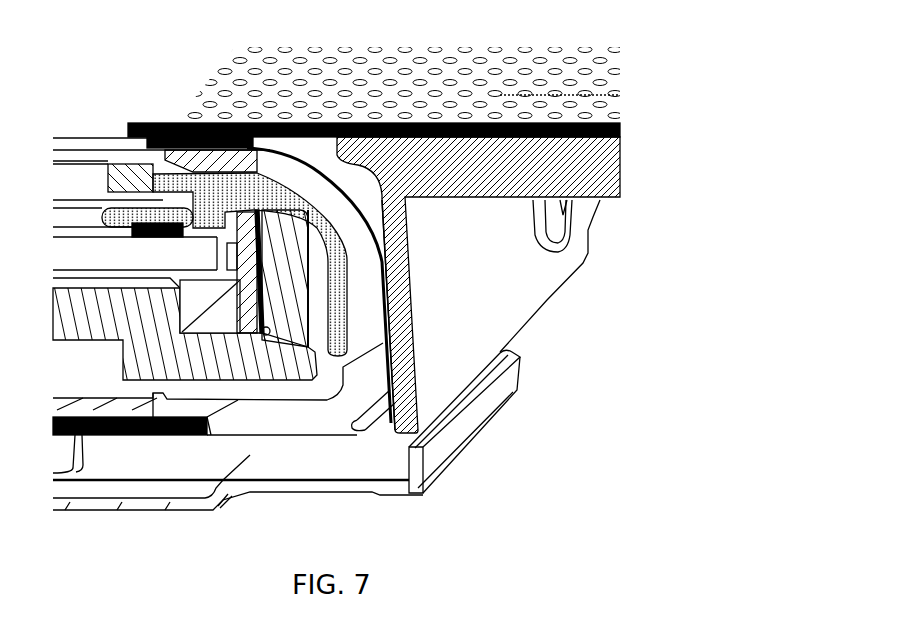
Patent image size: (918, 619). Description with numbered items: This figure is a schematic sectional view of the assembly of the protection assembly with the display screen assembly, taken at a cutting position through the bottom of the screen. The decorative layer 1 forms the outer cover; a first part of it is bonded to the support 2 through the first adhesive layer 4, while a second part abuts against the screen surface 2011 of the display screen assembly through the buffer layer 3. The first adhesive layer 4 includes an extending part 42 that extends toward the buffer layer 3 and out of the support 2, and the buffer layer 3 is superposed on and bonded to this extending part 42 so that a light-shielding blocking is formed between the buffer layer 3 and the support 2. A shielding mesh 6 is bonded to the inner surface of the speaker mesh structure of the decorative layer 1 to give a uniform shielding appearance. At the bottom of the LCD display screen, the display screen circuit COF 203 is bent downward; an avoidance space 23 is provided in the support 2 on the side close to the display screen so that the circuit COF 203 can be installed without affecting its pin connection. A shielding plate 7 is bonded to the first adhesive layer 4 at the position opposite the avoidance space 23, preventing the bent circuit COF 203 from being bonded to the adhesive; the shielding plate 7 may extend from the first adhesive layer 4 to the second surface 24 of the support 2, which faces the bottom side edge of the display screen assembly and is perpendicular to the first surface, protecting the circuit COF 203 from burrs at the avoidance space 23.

The decorative layer 1 is at (184, 84).
The extending part 42 is at (131, 126).
The shielding mesh 6 is at (240, 118).
The shielding plate 7 is at (308, 122).
The avoidance space 23 is at (383, 122).
The first adhesive layer 4 is at (451, 120).
The buffer layer 3 is at (133, 124).
The screen surface 2011 is at (92, 137).
The support 2 is at (463, 180).
The display screen circuit COF 203 is at (403, 235).
The second surface 24 is at (383, 329).